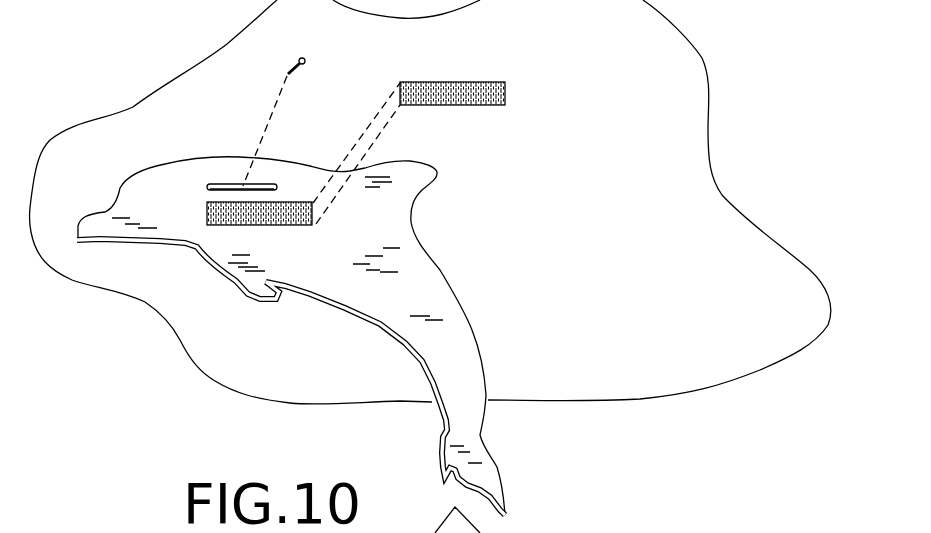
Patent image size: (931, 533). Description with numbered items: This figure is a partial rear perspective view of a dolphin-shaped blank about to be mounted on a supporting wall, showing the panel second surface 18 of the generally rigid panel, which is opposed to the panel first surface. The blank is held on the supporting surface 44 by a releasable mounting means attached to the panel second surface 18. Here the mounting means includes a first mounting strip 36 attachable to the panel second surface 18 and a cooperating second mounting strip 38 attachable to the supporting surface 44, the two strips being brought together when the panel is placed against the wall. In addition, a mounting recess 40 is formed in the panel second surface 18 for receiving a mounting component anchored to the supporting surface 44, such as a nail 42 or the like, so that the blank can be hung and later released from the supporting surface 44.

The panel second surface 18 is at (405, 288).
The first mounting strip 36 is at (206, 202).
The second mounting strip 38 is at (463, 82).
The mounting recess 40 is at (220, 185).
The nail 42 is at (290, 58).
The supporting surface 44 is at (639, 324).